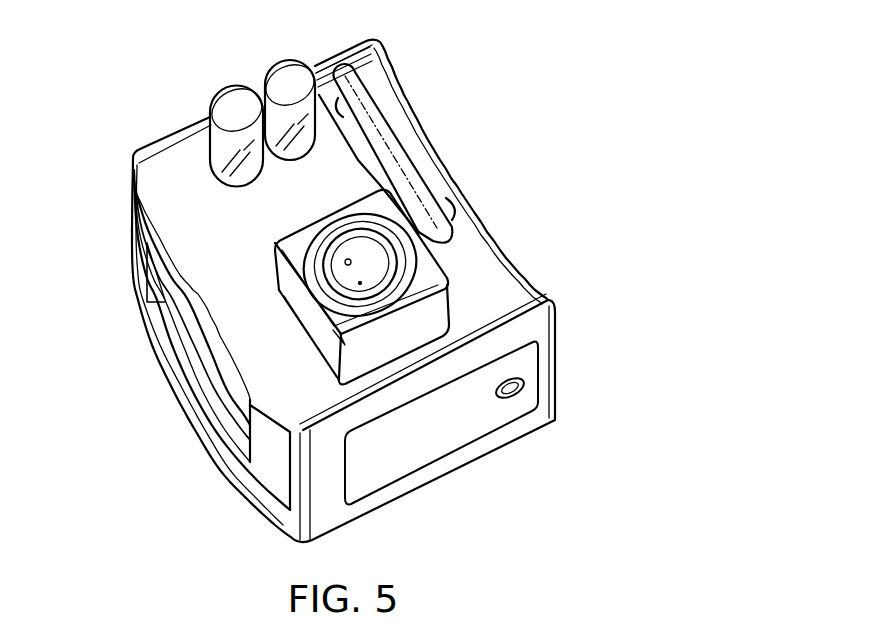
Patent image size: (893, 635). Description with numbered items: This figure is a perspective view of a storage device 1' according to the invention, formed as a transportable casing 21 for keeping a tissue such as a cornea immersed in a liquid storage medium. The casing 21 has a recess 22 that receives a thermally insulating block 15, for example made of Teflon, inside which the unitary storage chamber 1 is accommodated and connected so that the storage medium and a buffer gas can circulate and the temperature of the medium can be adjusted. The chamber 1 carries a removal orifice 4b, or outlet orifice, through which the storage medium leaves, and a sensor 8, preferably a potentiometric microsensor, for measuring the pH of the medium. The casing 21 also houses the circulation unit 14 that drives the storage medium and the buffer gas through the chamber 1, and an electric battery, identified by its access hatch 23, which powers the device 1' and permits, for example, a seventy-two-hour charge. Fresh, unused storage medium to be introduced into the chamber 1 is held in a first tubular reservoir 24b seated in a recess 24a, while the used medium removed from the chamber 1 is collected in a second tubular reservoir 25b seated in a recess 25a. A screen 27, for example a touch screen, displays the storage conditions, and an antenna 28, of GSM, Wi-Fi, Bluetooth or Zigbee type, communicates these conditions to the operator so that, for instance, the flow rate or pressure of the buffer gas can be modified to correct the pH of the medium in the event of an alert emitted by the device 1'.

The unitary storage chamber 1 is at (313, 337).
The storage device 1' is at (158, 345).
The removal orifice 4b is at (360, 283).
The sensor 8 is at (351, 262).
The circulation unit 14 is at (445, 425).
The thermally insulating block 15 is at (303, 318).
The casing 21 is at (287, 528).
The recess 22 is at (275, 292).
The access hatch 23 is at (395, 118).
The recess 24a is at (218, 183).
The first tubular reservoir 24b is at (228, 97).
The recess 25a is at (307, 160).
The second tubular reservoir 25b is at (282, 72).
The screen 27 is at (160, 293).
The antenna 28 is at (430, 208).